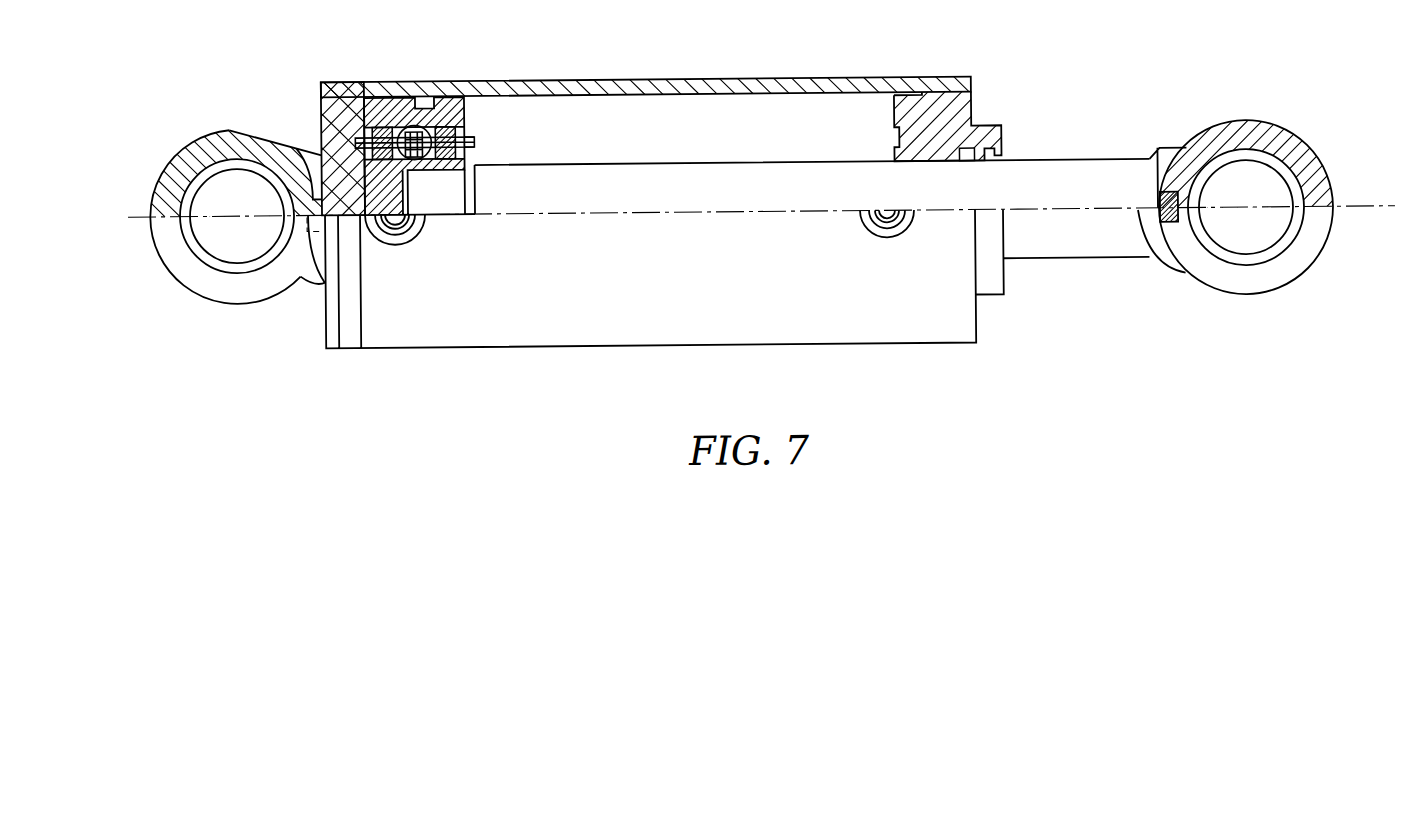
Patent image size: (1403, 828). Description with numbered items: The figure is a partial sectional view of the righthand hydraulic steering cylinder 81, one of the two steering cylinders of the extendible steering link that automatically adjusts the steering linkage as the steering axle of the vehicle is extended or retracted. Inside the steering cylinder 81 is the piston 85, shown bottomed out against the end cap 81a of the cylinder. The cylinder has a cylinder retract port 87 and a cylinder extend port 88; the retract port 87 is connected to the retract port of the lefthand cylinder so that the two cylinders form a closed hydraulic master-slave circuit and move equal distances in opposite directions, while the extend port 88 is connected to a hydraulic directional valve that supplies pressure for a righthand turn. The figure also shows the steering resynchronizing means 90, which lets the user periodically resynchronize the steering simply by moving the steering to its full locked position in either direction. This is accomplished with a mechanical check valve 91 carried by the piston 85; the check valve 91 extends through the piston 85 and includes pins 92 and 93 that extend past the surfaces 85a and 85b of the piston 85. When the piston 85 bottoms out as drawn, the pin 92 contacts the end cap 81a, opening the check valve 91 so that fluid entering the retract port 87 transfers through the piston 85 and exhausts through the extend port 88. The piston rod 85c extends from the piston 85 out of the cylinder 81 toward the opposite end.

The steering cylinder 81 is at (745, 80).
The end cap 81a is at (322, 88).
The piston 85 is at (432, 105).
The left surface of piston 85a is at (320, 150).
The surface of piston 85b is at (477, 164).
The piston rod 85c is at (1087, 184).
The cylinder retract port 87 is at (887, 224).
The cylinder extend port 88 is at (405, 234).
The steering resynchronizing means 90 is at (484, 138).
The mechanical check valve 91 is at (400, 134).
The pin 92 is at (357, 137).
The pin 93 is at (462, 137).